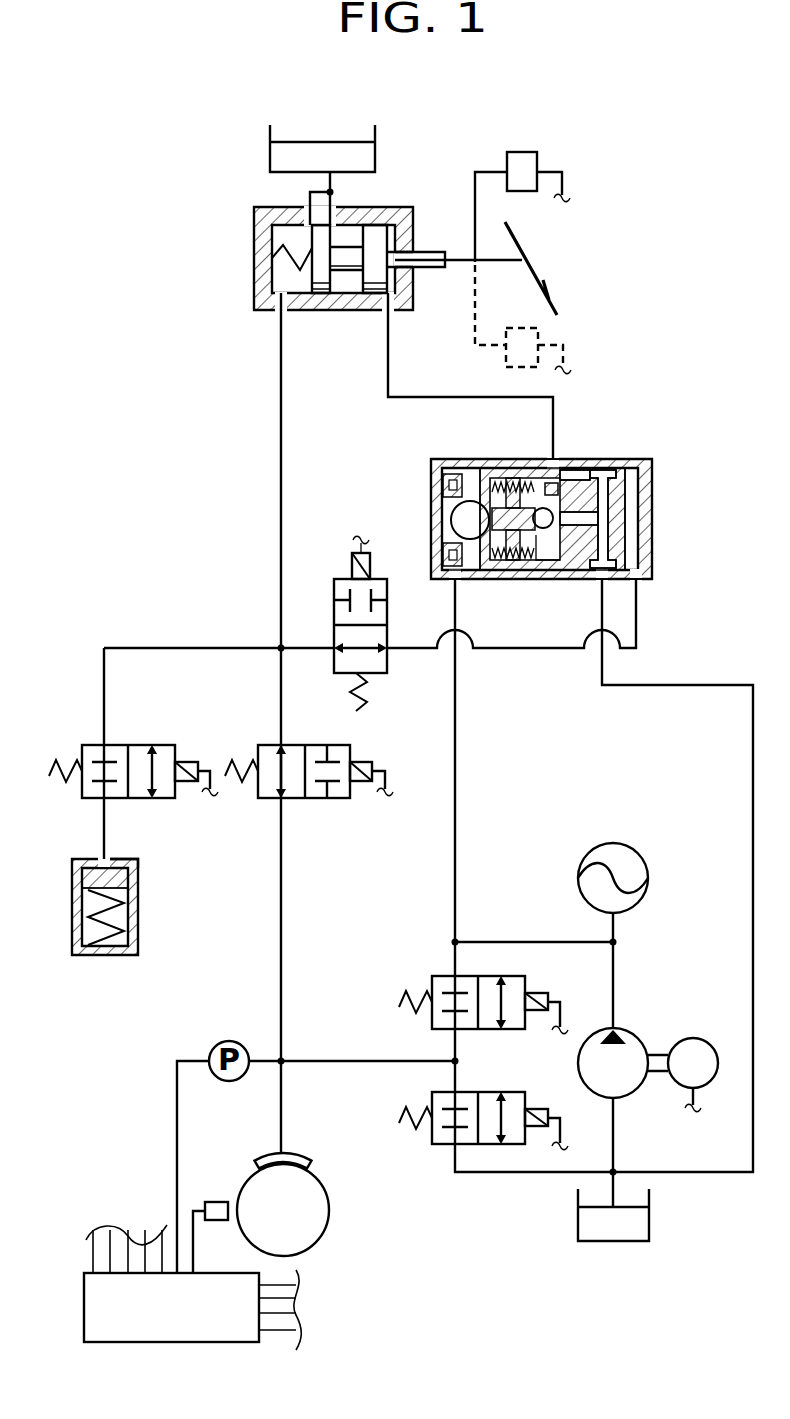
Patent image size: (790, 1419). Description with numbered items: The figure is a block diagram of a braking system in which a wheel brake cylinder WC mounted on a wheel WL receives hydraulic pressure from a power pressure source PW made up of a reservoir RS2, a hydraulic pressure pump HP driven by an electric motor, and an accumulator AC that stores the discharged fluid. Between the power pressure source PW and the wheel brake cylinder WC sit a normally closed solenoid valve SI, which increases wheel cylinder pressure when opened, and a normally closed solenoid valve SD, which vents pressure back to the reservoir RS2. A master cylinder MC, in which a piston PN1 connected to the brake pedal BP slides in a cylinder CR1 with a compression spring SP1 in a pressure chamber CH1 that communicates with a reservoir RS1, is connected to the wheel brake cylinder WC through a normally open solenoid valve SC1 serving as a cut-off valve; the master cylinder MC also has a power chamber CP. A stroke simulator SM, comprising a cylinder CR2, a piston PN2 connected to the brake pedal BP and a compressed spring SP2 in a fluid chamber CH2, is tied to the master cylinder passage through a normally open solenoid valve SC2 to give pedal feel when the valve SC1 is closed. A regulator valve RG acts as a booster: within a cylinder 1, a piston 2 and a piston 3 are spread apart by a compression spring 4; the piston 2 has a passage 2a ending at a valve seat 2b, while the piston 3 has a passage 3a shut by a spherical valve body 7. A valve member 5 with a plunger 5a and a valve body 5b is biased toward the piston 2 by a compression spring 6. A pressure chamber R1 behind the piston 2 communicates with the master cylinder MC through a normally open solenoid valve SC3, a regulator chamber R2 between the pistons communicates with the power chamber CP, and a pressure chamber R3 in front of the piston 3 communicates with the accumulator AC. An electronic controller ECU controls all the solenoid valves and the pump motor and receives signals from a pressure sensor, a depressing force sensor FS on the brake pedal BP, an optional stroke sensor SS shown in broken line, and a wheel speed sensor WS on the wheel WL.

The reservoir RS1 is at (287, 153).
The master cylinder MC is at (331, 318).
The piston PN1 is at (371, 240).
The cylinder CR1 is at (400, 215).
The compression spring SP1 is at (293, 255).
The pressure chamber CH1 is at (285, 280).
The power chamber CP is at (393, 285).
The depressing force sensor FS is at (521, 162).
The brake pedal BP is at (550, 290).
The stroke sensor SS is at (528, 342).
The regulator valve RG is at (641, 446).
The cylinder 1 is at (653, 463).
The piston 2 is at (628, 551).
The passage 2a is at (600, 519).
The valve seat 2b is at (554, 493).
The piston 3 is at (481, 478).
The passage 3a is at (471, 503).
The compression spring 4 is at (566, 477).
The valve member 5 is at (515, 482).
The plunger 5a is at (505, 549).
The valve body 5b is at (538, 553).
The compression spring 6 is at (503, 476).
The spherical valve body 7 is at (462, 523).
The pressure chamber R1 is at (638, 505).
The regulator chamber R2 is at (548, 549).
The pressure chamber R3 is at (431, 555).
The solenoid valve SC1 is at (307, 800).
The solenoid valve SC2 is at (130, 745).
The solenoid valve SC3 is at (346, 586).
The stroke simulator SM is at (97, 962).
The fluid chamber CH2 is at (78, 872).
The cylinder CR2 is at (130, 862).
The piston PN2 is at (115, 880).
The compressed spring SP2 is at (125, 935).
The power pressure source PW is at (558, 918).
The accumulator AC is at (647, 868).
The hydraulic pressure pump HP is at (634, 1034).
The solenoid valve SI is at (442, 975).
The solenoid valve SD is at (447, 1145).
The reservoir RS2 is at (641, 1227).
The wheel brake cylinder WC is at (299, 1160).
The wheel WL is at (313, 1228).
The wheel speed sensor WS is at (219, 1200).
The electronic controller ECU is at (192, 1287).